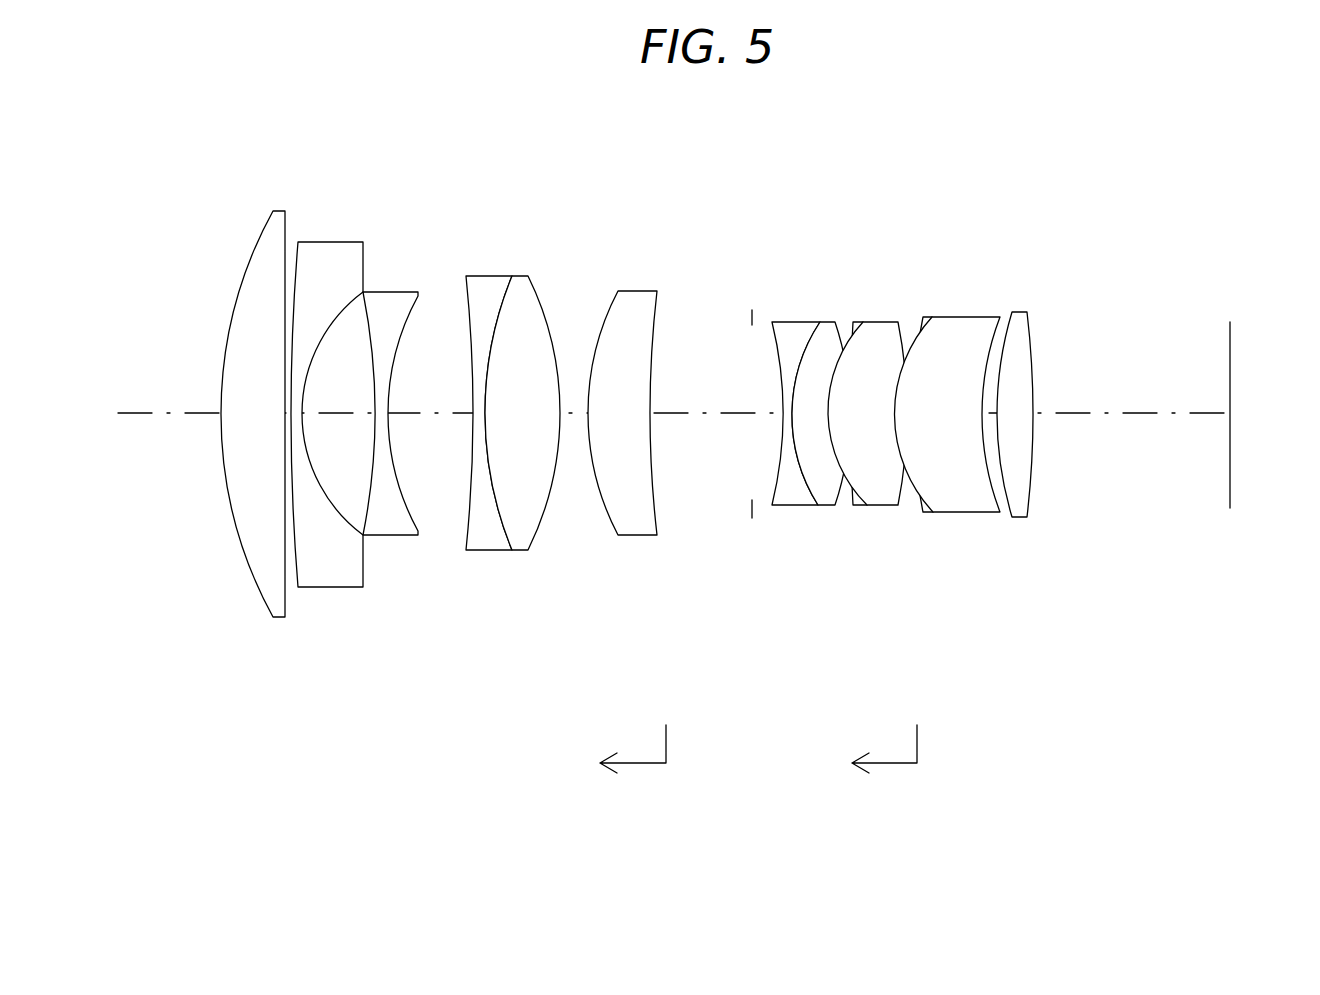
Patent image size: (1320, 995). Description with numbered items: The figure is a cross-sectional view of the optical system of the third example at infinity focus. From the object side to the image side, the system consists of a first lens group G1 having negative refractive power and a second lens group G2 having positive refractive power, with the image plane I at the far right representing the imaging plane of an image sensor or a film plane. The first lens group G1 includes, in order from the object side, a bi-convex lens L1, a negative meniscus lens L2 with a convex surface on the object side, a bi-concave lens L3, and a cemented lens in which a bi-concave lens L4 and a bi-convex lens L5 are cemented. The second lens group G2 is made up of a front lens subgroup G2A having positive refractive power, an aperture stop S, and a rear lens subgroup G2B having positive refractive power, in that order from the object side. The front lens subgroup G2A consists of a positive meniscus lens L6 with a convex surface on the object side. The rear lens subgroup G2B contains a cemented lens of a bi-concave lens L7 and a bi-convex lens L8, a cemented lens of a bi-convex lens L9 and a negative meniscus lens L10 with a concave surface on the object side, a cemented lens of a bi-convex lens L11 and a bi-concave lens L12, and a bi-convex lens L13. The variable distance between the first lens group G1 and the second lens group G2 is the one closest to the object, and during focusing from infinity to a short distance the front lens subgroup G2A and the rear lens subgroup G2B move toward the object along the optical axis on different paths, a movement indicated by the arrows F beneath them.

The bi-convex lens L1 is at (272, 228).
The negative meniscus lens L2 is at (330, 248).
The bi-concave lens L3 is at (388, 302).
The bi-concave lens L4 is at (492, 281).
The bi-convex lens L5 is at (518, 284).
The positive meniscus lens L6 is at (637, 300).
The bi-concave lens L7 is at (790, 325).
The bi-convex lens L8 is at (825, 325).
The bi-convex lens L9 is at (858, 327).
The negative meniscus lens L10 is at (885, 327).
The bi-convex lens L11 is at (928, 327).
The bi-concave lens L12 is at (975, 327).
The bi-convex lens L13 is at (1015, 327).
The aperture stop S is at (752, 312).
The image plane I is at (1231, 334).
The first lens group G1 is at (217, 648).
The second lens group G2 is at (1062, 585).
The lens subgroup 2A G2A is at (595, 648).
The lens subgroup 2B G2B is at (1062, 648).
The focusing movement direction F is at (758, 760).